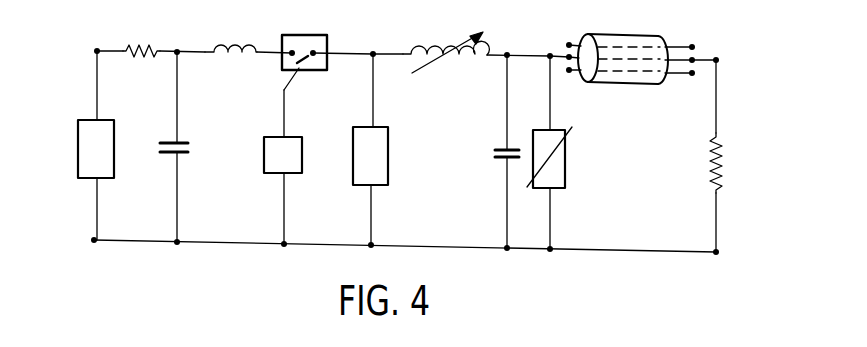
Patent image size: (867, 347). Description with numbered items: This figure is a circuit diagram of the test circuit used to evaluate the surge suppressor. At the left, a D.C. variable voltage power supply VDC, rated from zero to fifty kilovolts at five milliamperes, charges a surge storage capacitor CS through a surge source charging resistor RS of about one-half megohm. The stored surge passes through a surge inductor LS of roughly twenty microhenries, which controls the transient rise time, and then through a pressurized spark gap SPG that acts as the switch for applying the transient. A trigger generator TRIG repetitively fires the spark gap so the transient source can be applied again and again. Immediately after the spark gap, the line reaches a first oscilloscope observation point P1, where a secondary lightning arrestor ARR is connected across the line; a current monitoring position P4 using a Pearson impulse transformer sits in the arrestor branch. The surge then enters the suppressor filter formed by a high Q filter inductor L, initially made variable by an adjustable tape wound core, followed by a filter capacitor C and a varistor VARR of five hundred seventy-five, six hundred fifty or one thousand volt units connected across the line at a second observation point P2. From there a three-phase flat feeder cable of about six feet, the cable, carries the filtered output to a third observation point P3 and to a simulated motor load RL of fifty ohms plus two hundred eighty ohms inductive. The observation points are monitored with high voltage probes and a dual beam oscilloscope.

The oscilloscope observation point P1 is at (373, 52).
The oscilloscope observation point P2 is at (551, 56).
The oscilloscope observation point P3 is at (737, 45).
The current monitoring position P4 is at (371, 245).
The surge source charging resistor RS is at (141, 32).
The surge inductor LS is at (231, 29).
The surge storage capacitor CS is at (189, 155).
The pressurized spark gap SPG is at (306, 50).
The trigger generator TRIG is at (262, 174).
The high Q filter inductor L is at (446, 43).
The secondary lightning arrestor ARR is at (391, 171).
The filter capacitor C is at (495, 156).
The varistor VARR is at (576, 157).
The 3 phase flat feeder cable is at (641, 59).
The simulated motor load RL is at (729, 163).
The D.C. variable voltage power supply VDC is at (77, 149).